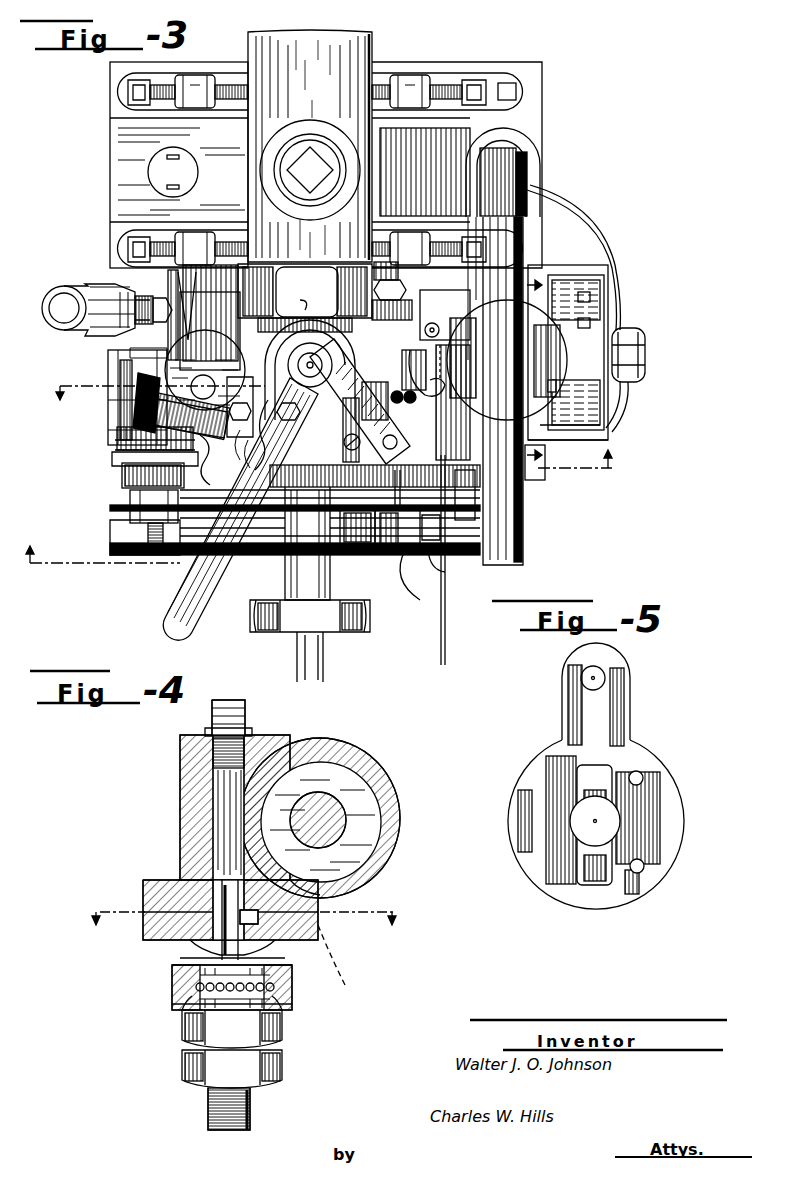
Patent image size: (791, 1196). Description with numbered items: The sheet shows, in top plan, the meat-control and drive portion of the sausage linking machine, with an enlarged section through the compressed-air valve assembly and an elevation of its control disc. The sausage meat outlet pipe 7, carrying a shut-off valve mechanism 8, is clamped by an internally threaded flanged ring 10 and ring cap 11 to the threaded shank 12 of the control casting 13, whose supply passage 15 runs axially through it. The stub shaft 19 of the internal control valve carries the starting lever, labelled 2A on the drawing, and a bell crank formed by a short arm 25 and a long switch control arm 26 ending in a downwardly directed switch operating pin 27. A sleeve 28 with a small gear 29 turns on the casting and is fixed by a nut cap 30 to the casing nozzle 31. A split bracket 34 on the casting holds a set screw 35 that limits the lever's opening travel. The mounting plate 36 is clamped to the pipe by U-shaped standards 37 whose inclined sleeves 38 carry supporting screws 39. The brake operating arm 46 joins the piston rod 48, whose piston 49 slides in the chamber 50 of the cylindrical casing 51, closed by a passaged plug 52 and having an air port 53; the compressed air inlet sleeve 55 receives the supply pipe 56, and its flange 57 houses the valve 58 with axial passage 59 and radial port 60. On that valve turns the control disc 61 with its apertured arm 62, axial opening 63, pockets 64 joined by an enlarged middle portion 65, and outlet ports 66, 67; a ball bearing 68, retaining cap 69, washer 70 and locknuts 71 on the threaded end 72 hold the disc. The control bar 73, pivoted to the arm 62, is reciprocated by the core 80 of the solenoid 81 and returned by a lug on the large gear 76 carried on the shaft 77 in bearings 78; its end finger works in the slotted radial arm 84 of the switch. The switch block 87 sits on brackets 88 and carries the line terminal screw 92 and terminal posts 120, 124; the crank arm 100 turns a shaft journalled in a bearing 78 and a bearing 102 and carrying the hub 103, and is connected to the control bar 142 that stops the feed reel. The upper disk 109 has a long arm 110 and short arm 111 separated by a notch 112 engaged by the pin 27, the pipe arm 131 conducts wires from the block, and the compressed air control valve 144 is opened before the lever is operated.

In FIG. 3, the sausage meat outlet pipe 7 is at (348, 44).
In FIG. 3, the shut-off valve mechanism 8 is at (315, 165).
In FIG. 3, the internally threaded flanged ring 10 is at (305, 298).
In FIG. 3, the internally threaded ring cap 11 is at (320, 296).
In FIG. 3, the externally threaded hub or shank 12 is at (330, 503).
In FIG. 3, the sausage meat control block or casting 13 is at (252, 342).
In FIG. 3, the sausage meat supply passage 15 is at (547, 371).
In FIG. 3, the stub shaft 19 is at (320, 362).
In FIG. 3, the operating lever end 2A is at (172, 618).
In FIG. 3, the short bell crank arm 25 is at (240, 509).
In FIG. 3, the long switch control arm 26 is at (360, 401).
In FIG. 3, the switch operating pin 27 is at (402, 552).
In FIG. 3, the sleeve 28 is at (308, 544).
In FIG. 3, the small gear 29 is at (305, 485).
In FIG. 3, the nut cap 30 is at (345, 622).
In FIG. 3, the sausage casing receiving pipe or nozzle 31 is at (323, 672).
In FIG. 3, the internally threaded split bracket 34 is at (230, 368).
In FIG. 3, the manually adjustable set screw 35 is at (135, 402).
In FIG. 3, the mounting plate or platform 36 is at (522, 123).
In FIG. 3, the U-shaped brackets or standards 37 is at (150, 230).
In FIG. 3, the internally threaded sleeves 38 is at (198, 78).
In FIG. 3, the adjustable supporting screws 39 is at (128, 243).
In FIG. 3, the brake operating arm 46 is at (192, 384).
In FIG. 4, the piston rod or stem 48 is at (345, 890).
In FIG. 4, the piston 49 is at (368, 770).
In FIG. 4, the chamber 50 is at (345, 830).
In FIG. 3, the cylindrical casing 51 is at (118, 372).
In FIG. 4, the cylindrical casing 51 is at (392, 798).
In FIG. 3, the axially passaged cap or plug 52 is at (192, 300).
In FIG. 4, the compressed air port 53 is at (333, 955).
In FIG. 4, the compressed air inlet sleeve 55 is at (195, 805).
In FIG. 3, the compressed air supply pipe 56 is at (75, 330).
In FIG. 4, the compressed air supply pipe 56 is at (215, 718).
In FIG. 3, the integral flange 57 is at (115, 442).
In FIG. 4, the valve 58 is at (205, 942).
In FIG. 4, the axial passage 59 is at (200, 958).
In FIG. 4, the radial port or passage 60 is at (240, 895).
In FIG. 3, the control disc or plate 61 is at (112, 460).
In FIG. 4, the control disc or plate 61 is at (160, 932).
In FIG. 5, the control disc or plate 61 is at (566, 905).
In FIG. 5, the apertured extension or arm 62 is at (612, 712).
In FIG. 5, the axial opening 63 is at (562, 850).
In FIG. 4, the arms or pockets 64 is at (178, 985).
In FIG. 5, the arms or pockets 64 is at (612, 766).
In FIG. 4, the enlarged middle portion 65 is at (238, 915).
In FIG. 5, the enlarged middle portion 65 is at (622, 812).
In FIG. 4, the air outlet port 66 is at (280, 960).
In FIG. 5, the air outlet port 66 is at (644, 778).
In FIG. 5, the air outlet port 67 is at (645, 868).
In FIG. 4, the ball bearing 68 is at (190, 1022).
In FIG. 3, the retaining cap 69 is at (126, 478).
In FIG. 4, the retaining cap 69 is at (178, 1000).
In FIG. 3, the washer 70 is at (130, 500).
In FIG. 4, the washer 70 is at (282, 1032).
In FIG. 3, the locknuts 71 is at (130, 516).
In FIG. 4, the locknuts 71 is at (188, 1060).
In FIG. 3, the outer threaded end 72 is at (89, 603).
In FIG. 4, the outer threaded end 72 is at (210, 1100).
In FIG. 3, the slidable control bar 73 is at (197, 467).
In FIG. 3, the large gear 76 is at (440, 526).
In FIG. 3, the shaft 77 is at (418, 602).
In FIG. 3, the bearings 78 is at (410, 552).
In FIG. 3, the core 80 is at (428, 375).
In FIG. 3, the solenoid 81 is at (388, 285).
In FIG. 3, the radial arm 84 is at (535, 480).
In FIG. 3, the insulation base 87 is at (570, 296).
In FIG. 3, the supporting brackets 88 is at (402, 396).
In FIG. 3, the line terminal screw 92 is at (590, 296).
In FIG. 3, the crank arm 100 is at (452, 568).
In FIG. 3, the bearing 102 is at (118, 565).
In FIG. 3, the hub or sleeve 103 is at (348, 548).
In FIG. 3, the upper insulation disk 109 is at (638, 352).
In FIG. 3, the long arm 110 is at (522, 515).
In FIG. 3, the short arm 111 is at (410, 365).
In FIG. 3, the notch 112 is at (480, 405).
In FIG. 3, the terminal post 120 is at (626, 404).
In FIG. 3, the terminal post 124 is at (590, 322).
In FIG. 3, the pipe arm 131 is at (500, 228).
In FIG. 3, the control bar 142 is at (447, 648).
In FIG. 3, the compressed air control valve 144 is at (140, 300).